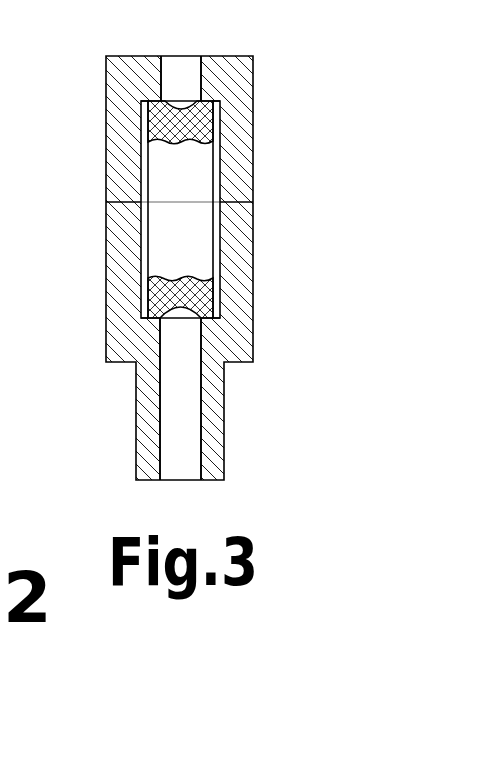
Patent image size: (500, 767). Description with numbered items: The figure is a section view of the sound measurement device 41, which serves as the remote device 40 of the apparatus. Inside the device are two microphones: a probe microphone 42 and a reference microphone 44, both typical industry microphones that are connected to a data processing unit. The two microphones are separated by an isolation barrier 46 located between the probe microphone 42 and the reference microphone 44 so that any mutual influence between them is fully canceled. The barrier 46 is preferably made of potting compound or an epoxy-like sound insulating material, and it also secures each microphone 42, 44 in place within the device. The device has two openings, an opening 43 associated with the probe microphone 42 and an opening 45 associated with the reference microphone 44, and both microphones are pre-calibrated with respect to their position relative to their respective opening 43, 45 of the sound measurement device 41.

The remote device 40 is at (250, 264).
The sound measurement device 41 is at (253, 322).
The probe microphone 42 is at (176, 306).
The opening 43 is at (160, 455).
The reference microphone 44 is at (158, 120).
The opening 45 is at (160, 100).
The isolation barrier 46 is at (187, 202).